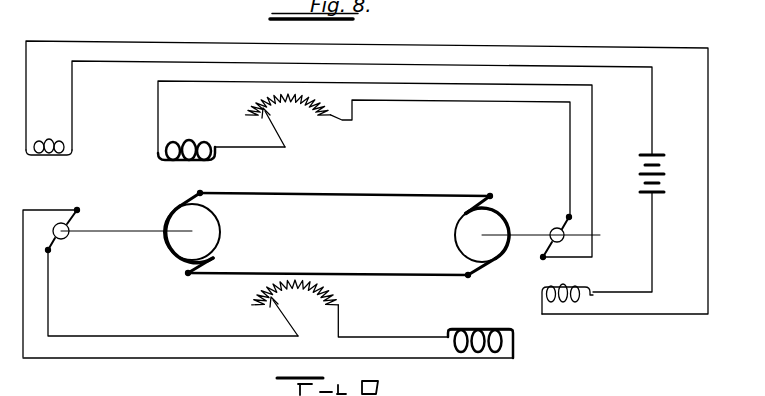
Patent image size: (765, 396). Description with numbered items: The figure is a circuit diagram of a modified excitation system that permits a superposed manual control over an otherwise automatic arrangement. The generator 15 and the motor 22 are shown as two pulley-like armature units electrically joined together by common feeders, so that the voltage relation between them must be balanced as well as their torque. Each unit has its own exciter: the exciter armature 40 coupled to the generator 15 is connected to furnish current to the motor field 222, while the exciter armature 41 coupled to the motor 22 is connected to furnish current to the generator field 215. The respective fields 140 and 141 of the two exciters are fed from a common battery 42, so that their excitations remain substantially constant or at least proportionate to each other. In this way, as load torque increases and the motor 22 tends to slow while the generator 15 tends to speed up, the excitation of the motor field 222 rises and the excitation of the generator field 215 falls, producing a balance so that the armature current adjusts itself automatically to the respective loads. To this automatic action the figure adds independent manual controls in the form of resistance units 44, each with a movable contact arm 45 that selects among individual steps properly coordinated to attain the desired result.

The exciter field 140 is at (49, 136).
The generator field 215 is at (195, 144).
The resistance unit 44 is at (352, 297).
The rheostat contact arm 45 is at (290, 140).
The exciter armature 40 is at (119, 233).
The generator 15 is at (208, 221).
The motor 22 is at (495, 219).
The exciter armature 41 is at (552, 237).
The battery 42 is at (663, 185).
The exciter field 141 is at (567, 304).
The motor field 222 is at (493, 352).